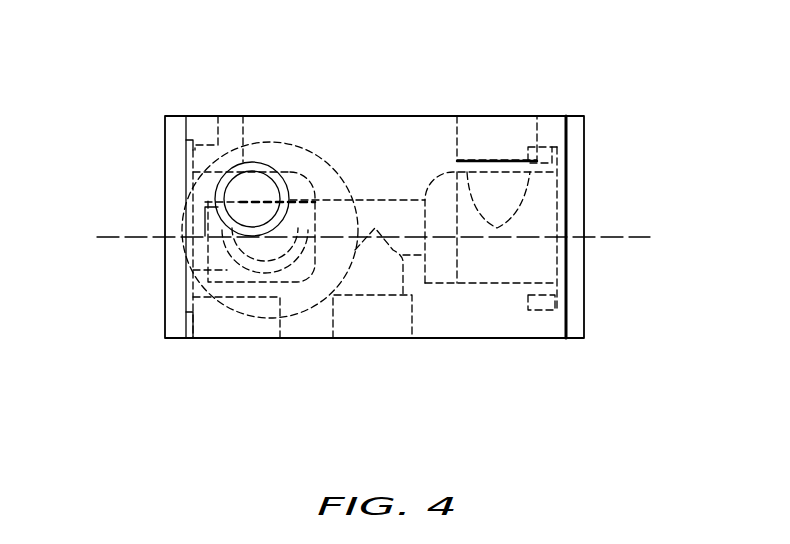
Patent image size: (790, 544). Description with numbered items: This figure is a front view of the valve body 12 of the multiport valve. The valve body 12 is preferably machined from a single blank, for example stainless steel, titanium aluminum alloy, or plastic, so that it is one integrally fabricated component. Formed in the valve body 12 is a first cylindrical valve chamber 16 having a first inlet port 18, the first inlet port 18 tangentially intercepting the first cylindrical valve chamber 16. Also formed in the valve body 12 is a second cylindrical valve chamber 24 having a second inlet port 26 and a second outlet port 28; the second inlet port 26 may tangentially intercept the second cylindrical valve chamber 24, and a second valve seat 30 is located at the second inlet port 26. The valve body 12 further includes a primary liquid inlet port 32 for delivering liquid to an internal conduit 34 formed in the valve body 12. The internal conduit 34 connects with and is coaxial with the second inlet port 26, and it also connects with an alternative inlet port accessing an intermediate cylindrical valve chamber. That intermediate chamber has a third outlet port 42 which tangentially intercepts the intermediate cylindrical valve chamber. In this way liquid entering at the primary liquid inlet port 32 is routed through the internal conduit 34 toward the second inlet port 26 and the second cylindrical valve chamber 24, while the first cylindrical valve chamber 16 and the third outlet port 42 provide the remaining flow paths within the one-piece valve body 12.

The valve body 12 is at (276, 112).
The first cylindrical valve chamber 16 is at (190, 270).
The first inlet port 18 is at (250, 333).
The second cylindrical valve chamber 24 is at (550, 207).
The second inlet port 26 is at (425, 247).
The second outlet port 28 is at (485, 117).
The second valve seat 30 is at (427, 258).
The primary liquid inlet port 32 is at (385, 325).
The internal conduit 34 is at (413, 200).
The third outlet port 42 is at (292, 207).